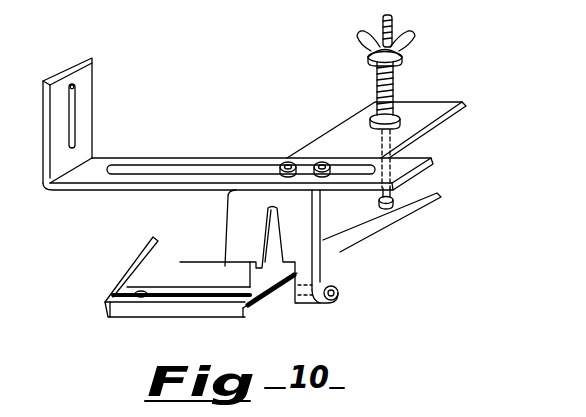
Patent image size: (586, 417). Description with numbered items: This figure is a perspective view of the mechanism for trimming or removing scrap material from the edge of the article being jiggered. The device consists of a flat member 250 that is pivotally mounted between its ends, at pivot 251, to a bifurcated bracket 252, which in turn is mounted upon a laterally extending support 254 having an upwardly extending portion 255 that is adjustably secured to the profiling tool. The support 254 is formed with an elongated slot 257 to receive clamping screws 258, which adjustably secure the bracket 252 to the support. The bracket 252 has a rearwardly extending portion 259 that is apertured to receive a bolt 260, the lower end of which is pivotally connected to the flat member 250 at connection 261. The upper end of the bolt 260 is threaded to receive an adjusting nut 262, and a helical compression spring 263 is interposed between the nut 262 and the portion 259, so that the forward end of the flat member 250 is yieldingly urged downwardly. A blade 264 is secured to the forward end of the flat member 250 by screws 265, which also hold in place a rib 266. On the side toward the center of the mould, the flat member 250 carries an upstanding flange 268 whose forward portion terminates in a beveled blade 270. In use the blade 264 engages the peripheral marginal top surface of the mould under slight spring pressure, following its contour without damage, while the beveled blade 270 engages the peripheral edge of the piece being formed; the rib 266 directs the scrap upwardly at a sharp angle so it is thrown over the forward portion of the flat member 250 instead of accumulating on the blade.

The flat member 250 is at (388, 233).
The pivot 251 is at (338, 292).
The bifurcated bracket 252 is at (323, 240).
The laterally extending support 254 is at (262, 119).
The upwardly extending portion 255 is at (88, 93).
The elongated slot 257 is at (147, 163).
The clamping screws 258 is at (318, 162).
The rearwardly extending portion 259 is at (437, 102).
The bolt 260 is at (420, 148).
The pivotal connection 261 is at (394, 204).
The adjusting nut 262 is at (422, 36).
The helical compression spring 263 is at (407, 65).
The blade 264 is at (173, 312).
The screws 265 is at (145, 297).
The rib 266 is at (204, 296).
The upstanding flange 268 is at (138, 256).
The beveled blade 270 is at (103, 310).